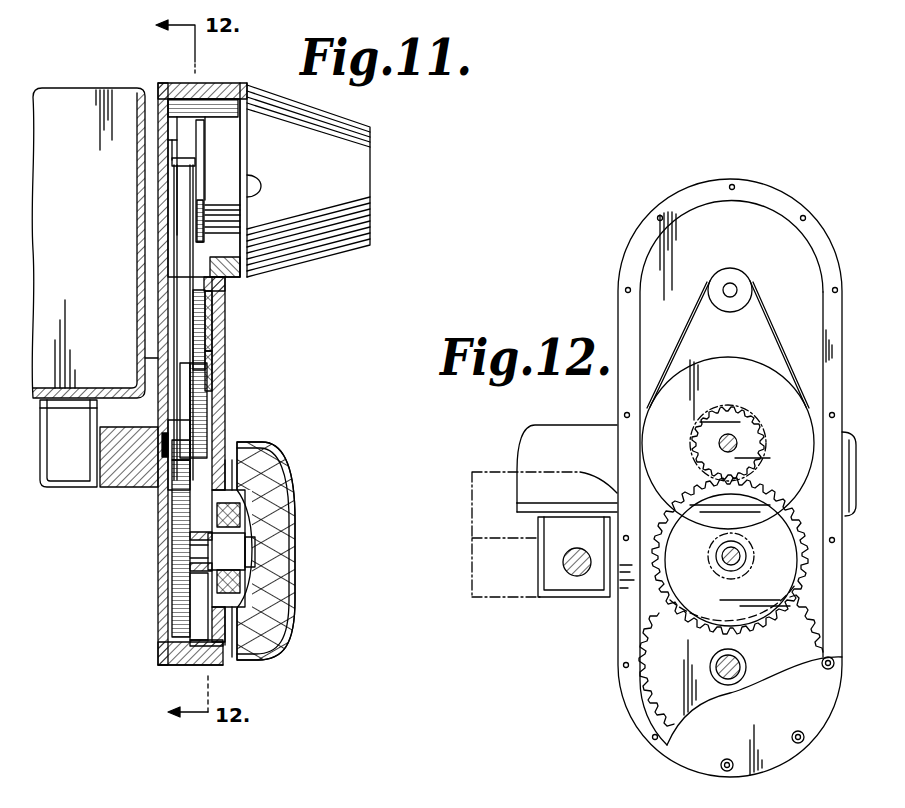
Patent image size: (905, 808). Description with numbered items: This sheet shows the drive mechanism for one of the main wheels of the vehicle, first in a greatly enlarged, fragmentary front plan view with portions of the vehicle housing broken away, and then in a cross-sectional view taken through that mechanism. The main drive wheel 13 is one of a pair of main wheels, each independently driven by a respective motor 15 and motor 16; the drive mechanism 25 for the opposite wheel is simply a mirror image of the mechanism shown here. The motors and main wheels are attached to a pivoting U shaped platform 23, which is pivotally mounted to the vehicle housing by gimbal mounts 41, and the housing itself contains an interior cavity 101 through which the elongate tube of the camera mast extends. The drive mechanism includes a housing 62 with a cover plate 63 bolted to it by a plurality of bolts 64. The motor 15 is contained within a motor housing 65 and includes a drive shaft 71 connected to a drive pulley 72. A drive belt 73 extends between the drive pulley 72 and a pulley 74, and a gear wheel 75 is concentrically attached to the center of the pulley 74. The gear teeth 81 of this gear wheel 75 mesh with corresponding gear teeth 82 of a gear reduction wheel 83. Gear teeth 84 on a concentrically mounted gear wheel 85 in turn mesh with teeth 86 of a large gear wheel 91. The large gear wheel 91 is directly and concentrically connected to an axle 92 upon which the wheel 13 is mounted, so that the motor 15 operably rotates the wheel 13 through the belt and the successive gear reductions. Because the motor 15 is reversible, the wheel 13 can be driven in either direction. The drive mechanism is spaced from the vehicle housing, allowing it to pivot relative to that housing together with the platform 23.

In FIG. 11, the main drive wheel 13 is at (282, 463).
In FIG. 11, the motor 15 is at (232, 158).
In FIG. 11, the motor 16 is at (372, 128).
In FIG. 11, the U shaped platform 23 is at (126, 487).
In FIG. 12, the U shaped platform 23 is at (493, 466).
In FIG. 11, the drive mechanism 25 is at (226, 372).
In FIG. 12, the drive mechanism 25 is at (618, 280).
In FIG. 11, the gimbal mount 41 is at (61, 487).
In FIG. 12, the gimbal mount 41 is at (568, 603).
In FIG. 11, the housing 62 is at (160, 83).
In FIG. 12, the housing 62 is at (759, 189).
In FIG. 11, the cover plate 63 is at (228, 318).
In FIG. 12, the cover plate 63 is at (685, 760).
In FIG. 11, the bolt 64 is at (231, 660).
In FIG. 12, the bolt 64 is at (808, 746).
In FIG. 11, the motor housing 65 is at (371, 198).
In FIG. 12, the drive shaft 71 is at (741, 291).
In FIG. 12, the drive pulley 72 is at (733, 268).
In FIG. 11, the drive belt 73 is at (182, 280).
In FIG. 12, the drive belt 73 is at (691, 319).
In FIG. 11, the pulley 74 is at (178, 237).
In FIG. 12, the pulley 74 is at (742, 392).
In FIG. 11, the gear wheel 75 is at (226, 290).
In FIG. 12, the gear wheel 75 is at (750, 420).
In FIG. 11, the gear teeth 81 is at (222, 352).
In FIG. 12, the gear teeth 81 is at (761, 468).
In FIG. 11, the gear teeth 82 is at (226, 404).
In FIG. 12, the gear teeth 82 is at (684, 506).
In FIG. 11, the gear reduction wheel 83 is at (225, 426).
In FIG. 12, the gear reduction wheel 83 is at (690, 555).
In FIG. 11, the gear teeth 84 is at (157, 448).
In FIG. 12, the gear wheel 85 is at (741, 553).
In FIG. 11, the teeth 86 is at (163, 593).
In FIG. 12, the teeth 86 is at (637, 683).
In FIG. 11, the large gear wheel 91 is at (172, 616).
In FIG. 12, the large gear wheel 91 is at (740, 688).
In FIG. 11, the axle 92 is at (162, 551).
In FIG. 12, the axle 92 is at (741, 656).
In FIG. 11, the interior cavity 101 is at (137, 161).